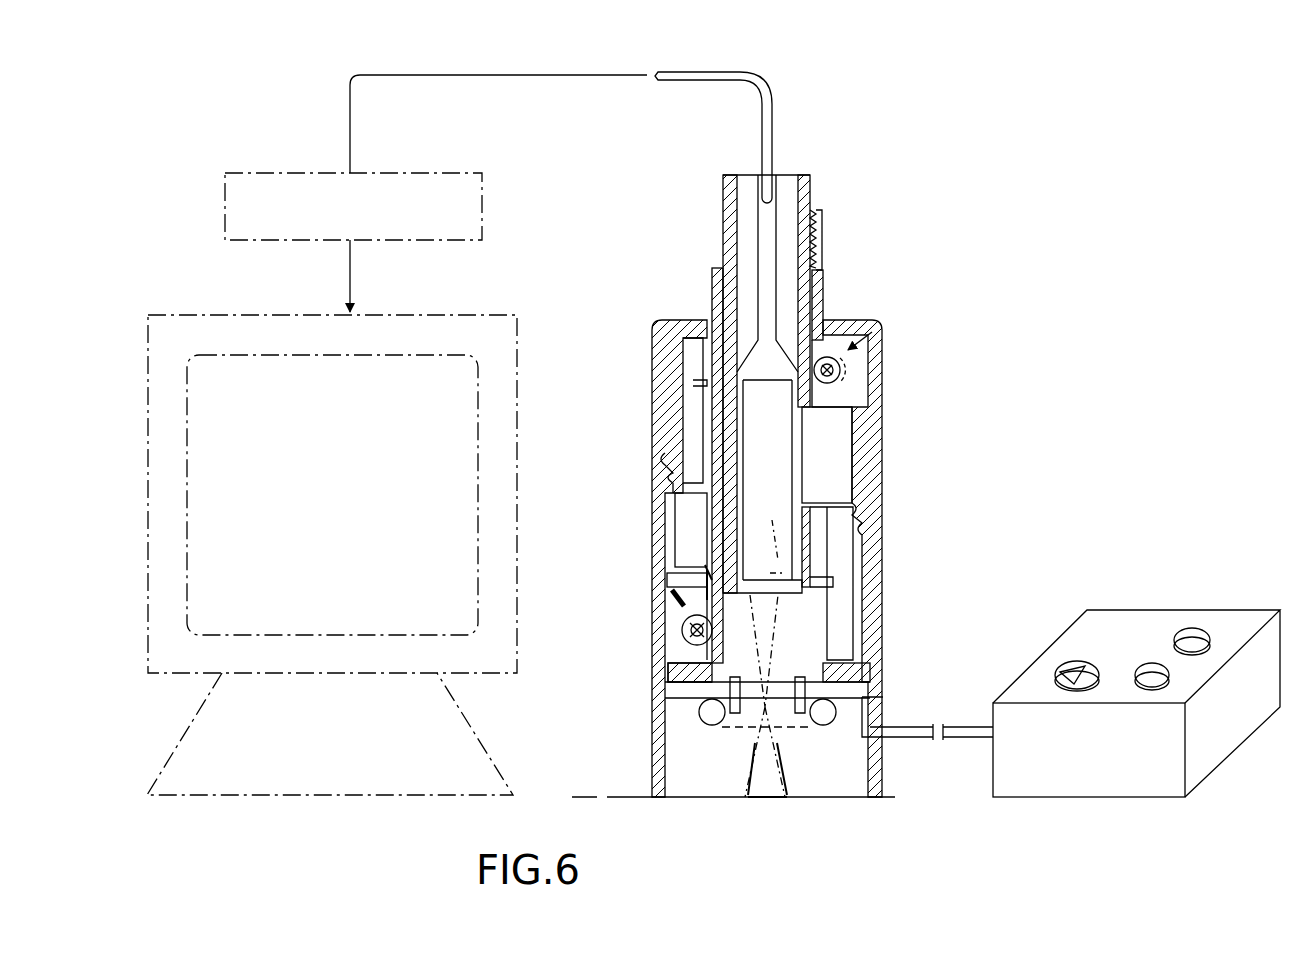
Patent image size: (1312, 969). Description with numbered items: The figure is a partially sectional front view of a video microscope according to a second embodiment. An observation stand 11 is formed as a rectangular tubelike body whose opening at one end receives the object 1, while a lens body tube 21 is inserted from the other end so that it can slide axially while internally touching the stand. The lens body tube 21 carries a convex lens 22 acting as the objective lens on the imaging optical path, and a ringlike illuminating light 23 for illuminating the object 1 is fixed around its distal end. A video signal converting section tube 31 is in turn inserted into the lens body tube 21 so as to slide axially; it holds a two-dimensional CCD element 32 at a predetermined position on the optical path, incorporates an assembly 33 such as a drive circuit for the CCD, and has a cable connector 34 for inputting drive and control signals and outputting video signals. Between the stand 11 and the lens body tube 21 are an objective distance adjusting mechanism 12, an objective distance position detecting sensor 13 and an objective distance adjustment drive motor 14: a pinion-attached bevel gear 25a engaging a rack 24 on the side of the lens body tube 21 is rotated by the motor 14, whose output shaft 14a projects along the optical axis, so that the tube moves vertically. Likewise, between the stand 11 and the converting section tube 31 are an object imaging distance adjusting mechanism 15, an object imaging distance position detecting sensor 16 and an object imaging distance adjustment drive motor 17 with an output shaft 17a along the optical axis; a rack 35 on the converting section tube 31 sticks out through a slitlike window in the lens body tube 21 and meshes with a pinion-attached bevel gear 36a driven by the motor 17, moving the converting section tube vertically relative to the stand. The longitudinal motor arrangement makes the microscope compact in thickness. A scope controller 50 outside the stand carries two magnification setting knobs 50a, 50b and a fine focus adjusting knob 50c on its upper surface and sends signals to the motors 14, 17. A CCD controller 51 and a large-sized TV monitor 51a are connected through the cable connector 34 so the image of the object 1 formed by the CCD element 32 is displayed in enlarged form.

The object 1 is at (767, 800).
The observation stand 11 is at (882, 472).
The objective distance adjusting mechanism 12 is at (672, 590).
The objective distance position detecting sensor 13 is at (685, 397).
The objective distance adjustment drive motor 14 is at (688, 527).
The output shaft 14a is at (683, 623).
The object imaging distance adjusting mechanism 15 is at (832, 362).
The object imaging distance position detecting sensor 16 is at (840, 548).
The object imaging distance adjustment drive motor 17 is at (842, 420).
The output shaft 17a is at (872, 332).
The lens body tube 21 is at (712, 270).
The convex lens 22 is at (738, 722).
The illuminating light 23 is at (823, 726).
The rack 24 is at (706, 575).
The pinion-attached bevel gear 25a is at (683, 638).
The video signal converting section tube 31 is at (722, 195).
The two-dimensional CCD element 32 is at (768, 533).
The assembly 33 is at (782, 455).
The cable connector 34 is at (770, 230).
The rack 35 is at (823, 240).
The pinion-attached bevel gear 36a is at (828, 360).
The scope controller 50 is at (1153, 612).
The magnification setting knob 50a is at (1090, 672).
The magnification setting knob 50b is at (1152, 682).
The fine focus adjusting knob 50c is at (1190, 634).
The CCD controller 51 is at (240, 172).
The TV monitor 51a is at (148, 325).